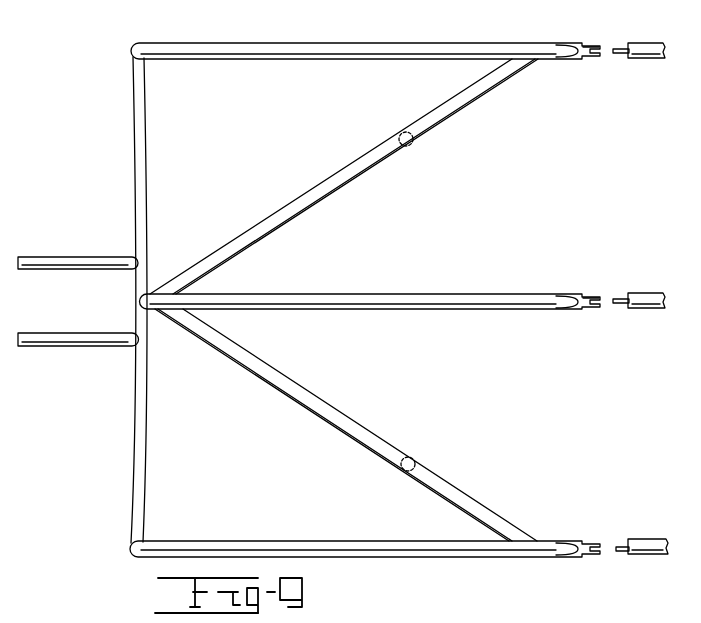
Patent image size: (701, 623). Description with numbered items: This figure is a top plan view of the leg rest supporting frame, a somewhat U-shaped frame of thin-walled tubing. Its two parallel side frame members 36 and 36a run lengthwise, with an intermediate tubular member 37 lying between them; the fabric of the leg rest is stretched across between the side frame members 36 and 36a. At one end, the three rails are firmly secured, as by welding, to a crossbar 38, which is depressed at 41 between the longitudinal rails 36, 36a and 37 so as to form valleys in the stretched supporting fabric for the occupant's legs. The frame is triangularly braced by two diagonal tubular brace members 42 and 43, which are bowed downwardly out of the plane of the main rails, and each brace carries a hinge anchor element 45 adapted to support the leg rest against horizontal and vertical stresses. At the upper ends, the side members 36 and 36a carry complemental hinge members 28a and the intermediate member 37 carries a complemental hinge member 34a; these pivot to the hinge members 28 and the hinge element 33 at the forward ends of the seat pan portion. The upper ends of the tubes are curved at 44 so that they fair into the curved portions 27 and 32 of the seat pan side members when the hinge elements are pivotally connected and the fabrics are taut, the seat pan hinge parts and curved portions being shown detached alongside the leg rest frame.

The curved portion of side frame member 27 is at (656, 61).
The hinge member 28 is at (619, 55).
The complemental hinge member 28a is at (599, 50).
The curved portion of seat pan portion 32 is at (651, 308).
The hinge element 33 is at (625, 294).
The complemental hinge member 34a is at (594, 293).
The side frame member 36 is at (256, 60).
The side frame member 36a is at (305, 541).
The intermediate tubular member 37 is at (428, 310).
The crossbar 38 is at (131, 315).
The depressed portion 41 is at (148, 144).
The diagonal tubular brace member 42 is at (338, 192).
The diagonal tubular brace member 43 is at (348, 422).
The curved upper end 44 is at (546, 52).
The hinge anchor element 45 is at (409, 148).